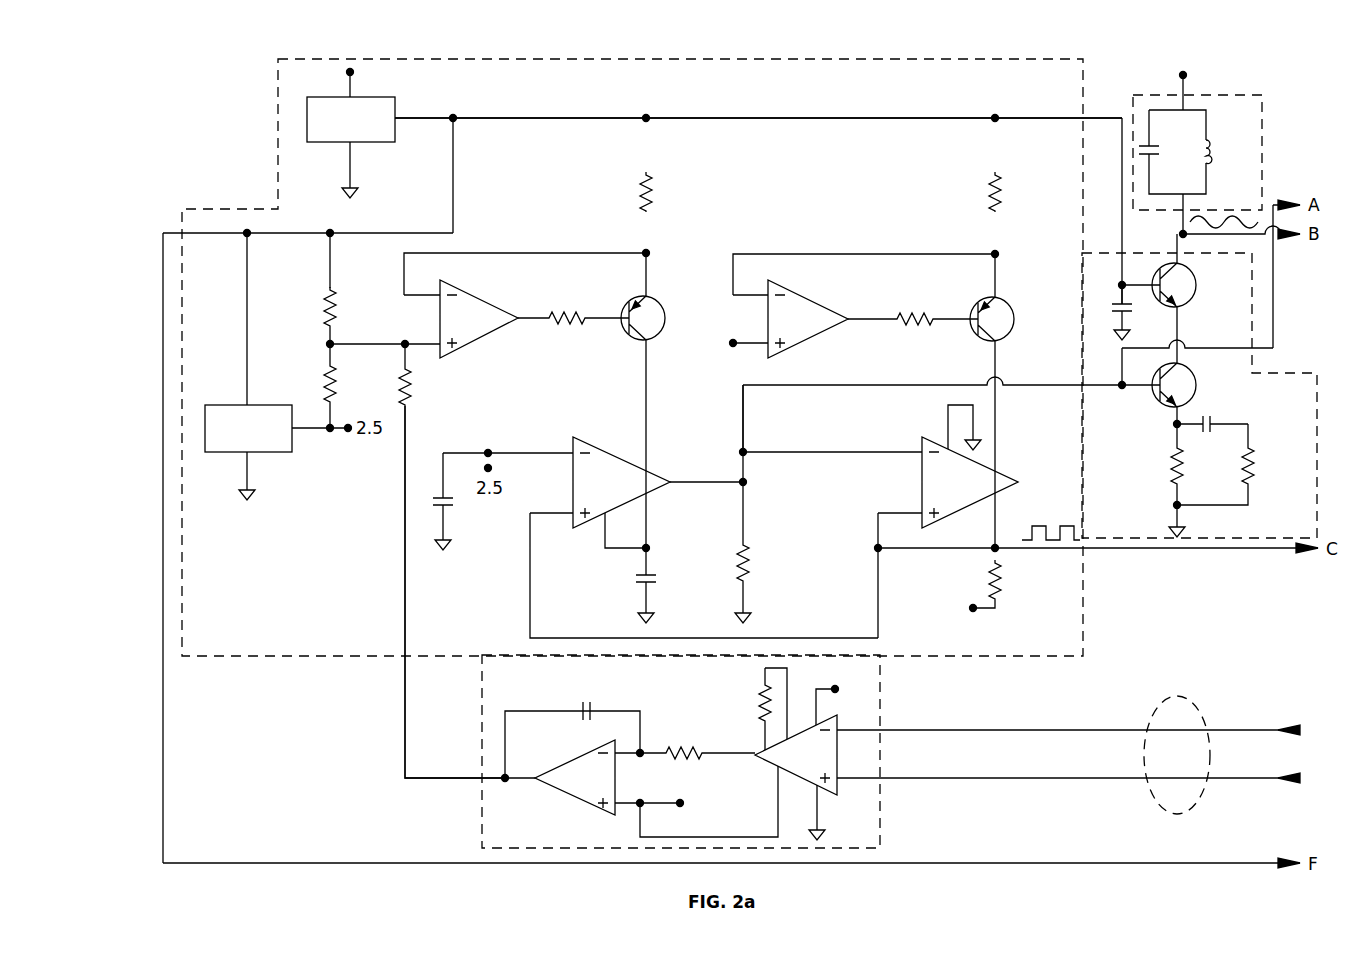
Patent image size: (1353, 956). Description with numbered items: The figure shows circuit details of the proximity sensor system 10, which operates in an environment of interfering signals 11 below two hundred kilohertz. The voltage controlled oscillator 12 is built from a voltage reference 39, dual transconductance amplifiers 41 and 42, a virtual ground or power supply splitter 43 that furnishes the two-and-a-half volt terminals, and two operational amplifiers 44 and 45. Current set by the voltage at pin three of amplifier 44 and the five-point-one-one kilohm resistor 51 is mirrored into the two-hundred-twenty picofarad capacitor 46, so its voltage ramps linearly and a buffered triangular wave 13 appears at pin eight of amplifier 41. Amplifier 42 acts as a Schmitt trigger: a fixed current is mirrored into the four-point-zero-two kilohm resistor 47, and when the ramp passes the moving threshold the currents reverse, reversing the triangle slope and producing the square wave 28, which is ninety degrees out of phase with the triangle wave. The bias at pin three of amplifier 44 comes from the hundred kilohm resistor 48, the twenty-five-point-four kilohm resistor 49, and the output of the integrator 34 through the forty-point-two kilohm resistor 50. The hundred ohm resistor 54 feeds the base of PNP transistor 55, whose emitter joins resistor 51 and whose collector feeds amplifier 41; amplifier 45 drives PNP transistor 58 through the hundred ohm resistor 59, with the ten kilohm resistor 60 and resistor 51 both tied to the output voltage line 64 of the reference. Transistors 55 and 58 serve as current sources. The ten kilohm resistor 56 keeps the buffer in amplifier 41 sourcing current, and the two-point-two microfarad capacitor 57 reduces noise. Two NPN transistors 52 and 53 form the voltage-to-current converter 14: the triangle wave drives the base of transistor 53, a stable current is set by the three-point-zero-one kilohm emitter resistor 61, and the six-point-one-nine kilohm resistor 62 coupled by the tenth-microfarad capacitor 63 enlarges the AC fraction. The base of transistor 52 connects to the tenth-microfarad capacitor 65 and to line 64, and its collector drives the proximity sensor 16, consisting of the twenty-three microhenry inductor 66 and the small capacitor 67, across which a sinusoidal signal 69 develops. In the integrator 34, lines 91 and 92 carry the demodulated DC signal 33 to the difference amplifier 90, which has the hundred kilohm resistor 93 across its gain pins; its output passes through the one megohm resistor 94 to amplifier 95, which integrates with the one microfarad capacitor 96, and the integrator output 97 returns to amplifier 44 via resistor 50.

The proximity sensor system 10 is at (186, 150).
The interfering signals 11 is at (1228, 154).
The voltage controlled oscillator 12 is at (236, 664).
The triangular wave 13 is at (886, 360).
The voltage-to-current converter 14 is at (1272, 378).
The proximity sensor 16 is at (1224, 98).
The square wave 28 is at (1040, 524).
The DC signal 33 is at (1186, 706).
The integrator 34 is at (478, 823).
The voltage reference 39 is at (376, 96).
The transconductance amplifier 41 is at (569, 446).
The transconductance amplifier 42 is at (970, 518).
The power supply splitter 43 is at (283, 452).
The operational amplifier 44 is at (474, 296).
The operational amplifier 45 is at (799, 296).
The capacitor 46 is at (646, 596).
The resistor 47 is at (1003, 580).
The resistor 48 is at (323, 302).
The resistor 49 is at (334, 386).
The resistor 50 is at (398, 385).
The resistor 51 is at (654, 192).
The NPN transistor 52 is at (1196, 285).
The NPN transistor 53 is at (1158, 402).
The resistor 54 is at (574, 321).
The PNP transistor 55 is at (666, 318).
The resistor 56 is at (750, 562).
The capacitor 57 is at (439, 500).
The PNP transistor 58 is at (1014, 319).
The resistor 59 is at (911, 324).
The resistor 60 is at (1003, 192).
The emitter resistor 61 is at (1176, 465).
The resistor 62 is at (1248, 446).
The capacitor 63 is at (1206, 428).
The output voltage line 64 is at (559, 118).
The capacitor 65 is at (1112, 304).
The inductor 66 is at (1206, 142).
The capacitor 67 is at (1158, 160).
The sinusoidal signal 69 is at (1245, 220).
The difference amplifier 90 is at (776, 770).
The line 91 is at (1071, 730).
The line 92 is at (1071, 780).
The resistor 93 is at (765, 690).
The resistor 94 is at (661, 760).
The amplifier 95 is at (576, 804).
The capacitor 96 is at (584, 716).
The integrator output 97 is at (404, 725).